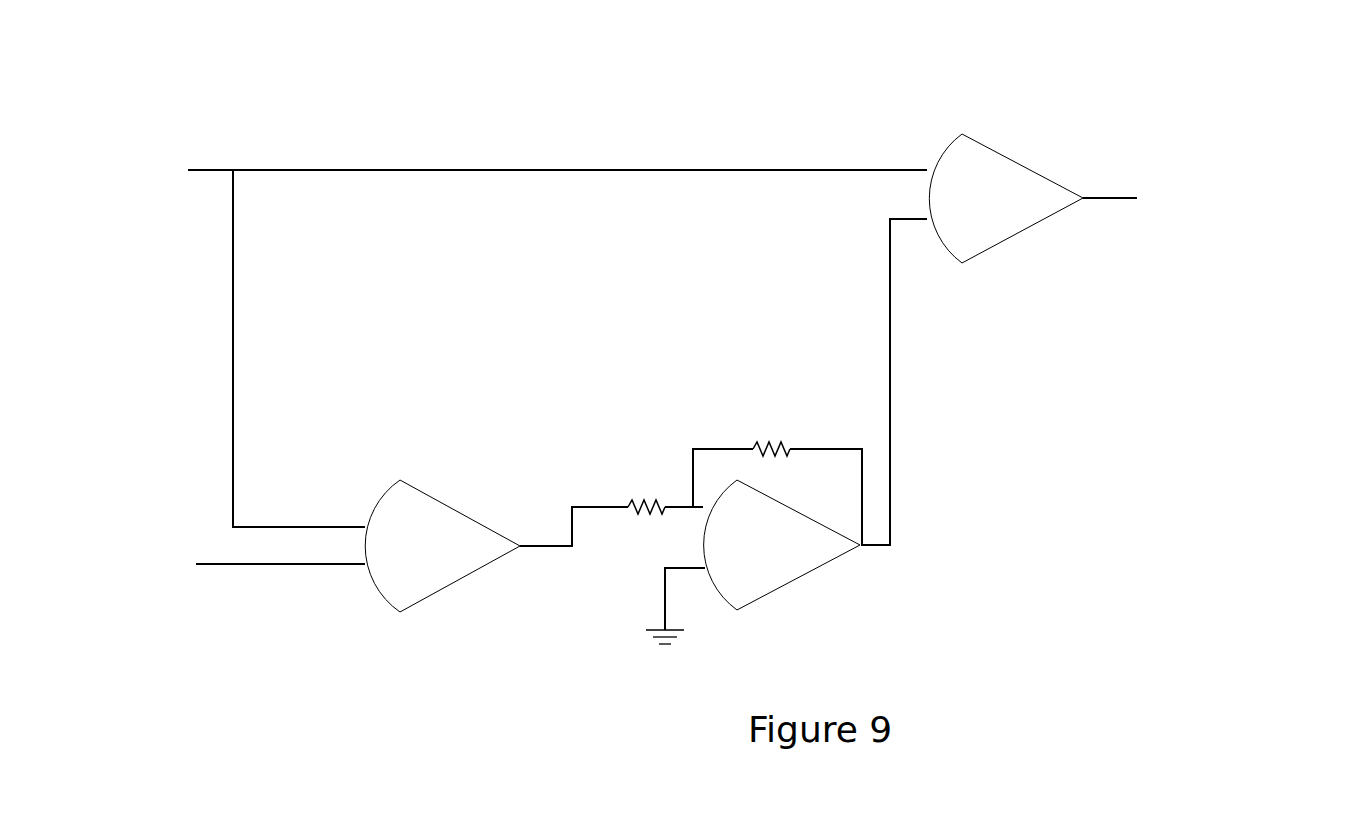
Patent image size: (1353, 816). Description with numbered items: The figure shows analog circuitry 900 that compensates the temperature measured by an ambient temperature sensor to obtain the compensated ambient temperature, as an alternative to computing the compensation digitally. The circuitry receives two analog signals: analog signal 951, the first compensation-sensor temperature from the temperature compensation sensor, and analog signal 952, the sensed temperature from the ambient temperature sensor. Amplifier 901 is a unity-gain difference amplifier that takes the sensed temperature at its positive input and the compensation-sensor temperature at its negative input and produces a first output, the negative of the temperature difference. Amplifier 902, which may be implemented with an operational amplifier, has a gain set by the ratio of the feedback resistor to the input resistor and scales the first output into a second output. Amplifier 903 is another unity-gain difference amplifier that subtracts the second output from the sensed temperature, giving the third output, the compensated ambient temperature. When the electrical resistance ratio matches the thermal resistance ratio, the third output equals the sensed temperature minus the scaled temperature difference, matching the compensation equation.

The analog circuitry 900 is at (1062, 66).
The amplifier 901 is at (448, 505).
The amplifier 902 is at (802, 578).
The amplifier 903 is at (1018, 243).
The analog signal 951 is at (190, 573).
The analog signal 952 is at (165, 162).